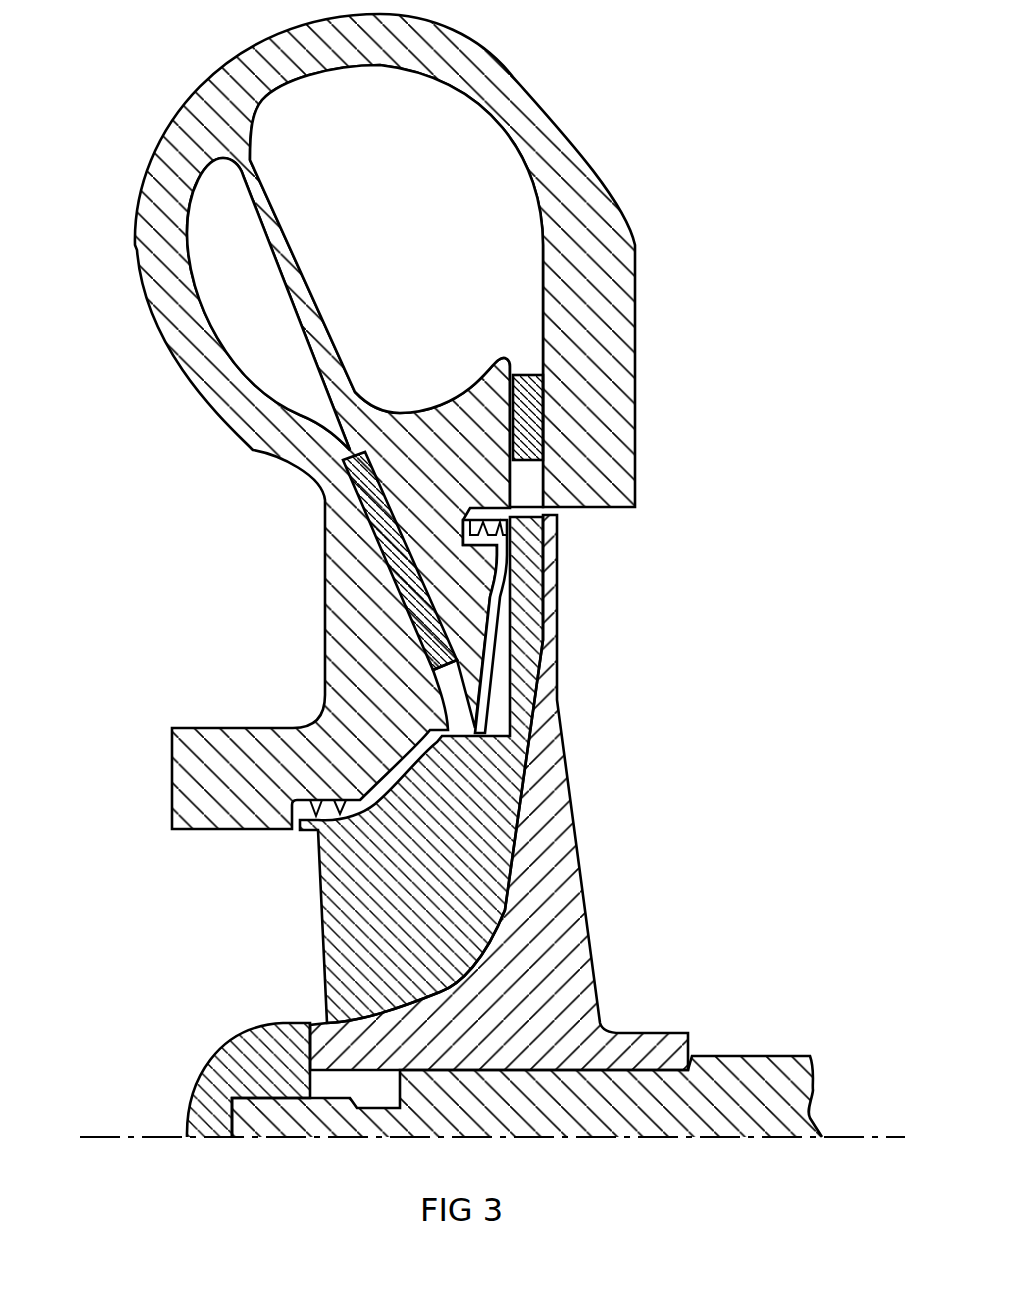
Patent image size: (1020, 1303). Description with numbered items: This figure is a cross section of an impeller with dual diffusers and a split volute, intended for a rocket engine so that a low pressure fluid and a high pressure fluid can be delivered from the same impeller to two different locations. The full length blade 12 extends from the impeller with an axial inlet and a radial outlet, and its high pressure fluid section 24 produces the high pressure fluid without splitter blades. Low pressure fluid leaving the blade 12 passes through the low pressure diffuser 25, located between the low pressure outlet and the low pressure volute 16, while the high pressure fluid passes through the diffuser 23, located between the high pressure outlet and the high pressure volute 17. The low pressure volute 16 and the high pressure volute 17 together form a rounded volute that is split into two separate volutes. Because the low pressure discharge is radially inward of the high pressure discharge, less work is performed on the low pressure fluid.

The full length blade 12 is at (385, 905).
The low pressure volute 16 is at (232, 290).
The high pressure volute 17 is at (425, 185).
The diffuser 23 is at (527, 410).
The high pressure fluid section 24 is at (540, 630).
The low pressure diffuser 25 is at (385, 550).